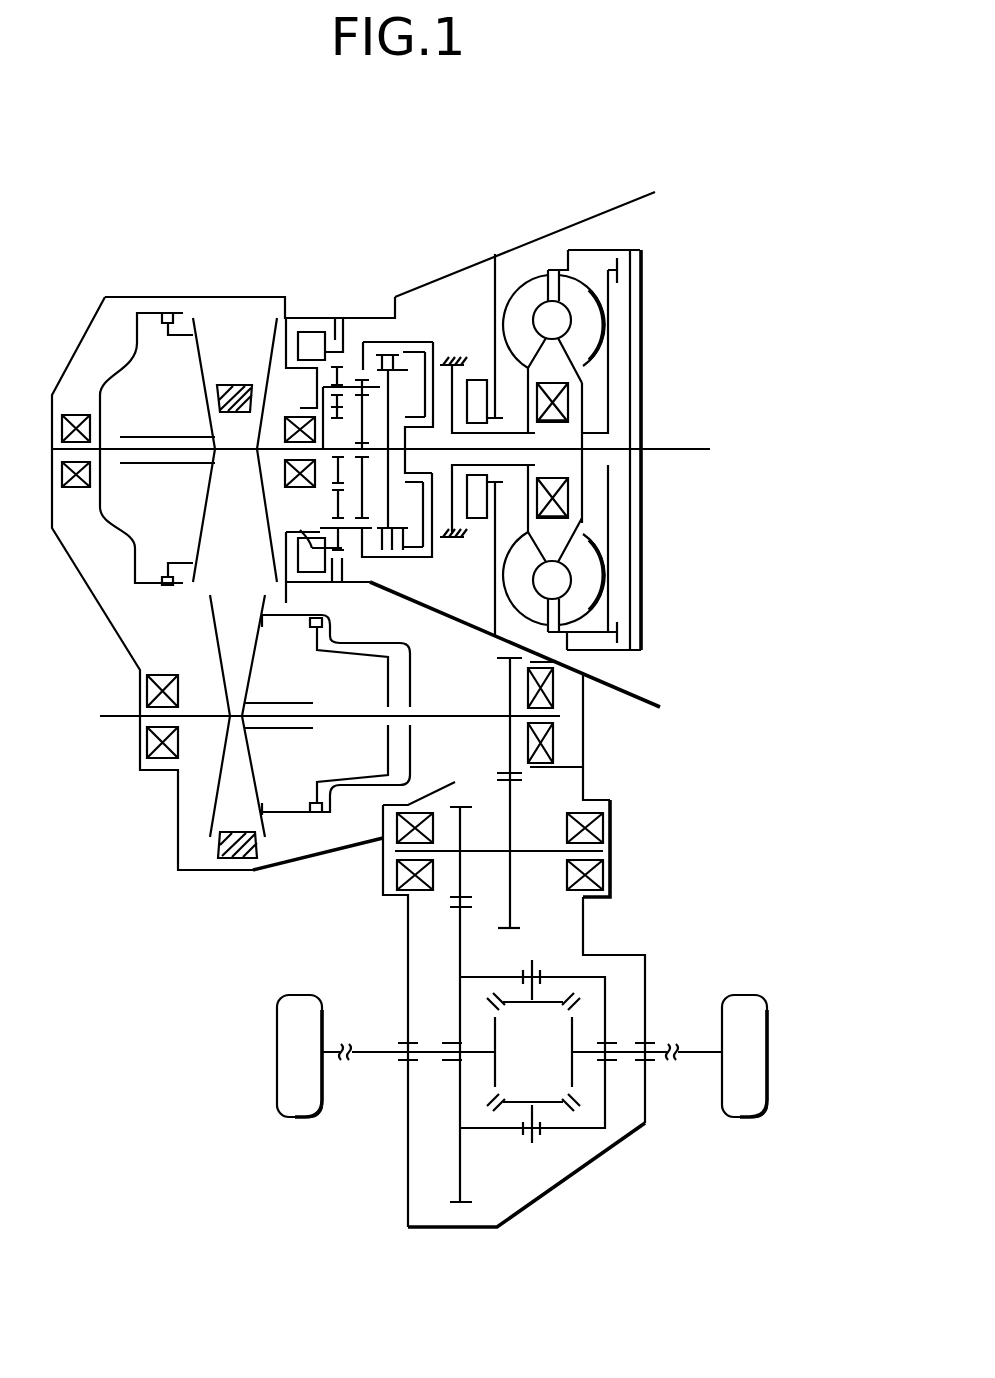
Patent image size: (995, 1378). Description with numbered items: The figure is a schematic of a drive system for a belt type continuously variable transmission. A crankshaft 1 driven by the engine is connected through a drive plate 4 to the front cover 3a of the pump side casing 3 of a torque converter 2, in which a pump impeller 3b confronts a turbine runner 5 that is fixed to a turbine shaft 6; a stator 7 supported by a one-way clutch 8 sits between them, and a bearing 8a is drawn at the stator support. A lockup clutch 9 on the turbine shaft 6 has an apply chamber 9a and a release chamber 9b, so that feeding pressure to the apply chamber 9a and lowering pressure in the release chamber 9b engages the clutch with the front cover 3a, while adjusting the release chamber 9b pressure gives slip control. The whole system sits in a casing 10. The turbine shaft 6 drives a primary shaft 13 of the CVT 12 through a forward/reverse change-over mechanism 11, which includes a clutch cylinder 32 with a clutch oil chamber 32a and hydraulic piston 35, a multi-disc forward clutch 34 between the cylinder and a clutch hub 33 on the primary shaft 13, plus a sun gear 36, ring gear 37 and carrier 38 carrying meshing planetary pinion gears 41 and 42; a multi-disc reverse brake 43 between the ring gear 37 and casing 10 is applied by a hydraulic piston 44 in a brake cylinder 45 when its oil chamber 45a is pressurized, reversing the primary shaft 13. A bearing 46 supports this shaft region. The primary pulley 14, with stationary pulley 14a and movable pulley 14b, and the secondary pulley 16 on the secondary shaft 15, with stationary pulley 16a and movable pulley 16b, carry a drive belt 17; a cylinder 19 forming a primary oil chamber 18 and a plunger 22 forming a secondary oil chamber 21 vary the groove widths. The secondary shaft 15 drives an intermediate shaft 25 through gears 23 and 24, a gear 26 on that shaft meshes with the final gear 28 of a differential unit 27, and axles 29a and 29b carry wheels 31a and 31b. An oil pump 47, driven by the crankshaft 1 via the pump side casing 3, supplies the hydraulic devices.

The crankshaft 1 is at (705, 452).
The torque converter 2 is at (523, 266).
The pump side casing 3 is at (613, 413).
The front cover 3a is at (630, 305).
The pump impeller 3b is at (540, 285).
The drive plate 4 is at (642, 352).
The turbine runner 5 is at (590, 325).
The turbine shaft 6 is at (578, 483).
The stator 7 is at (560, 394).
The one-way clutch 8 is at (575, 456).
The bearing 8a is at (565, 410).
The lockup clutch 9 is at (635, 435).
The apply chamber 9a is at (592, 257).
The release chamber 9b is at (622, 290).
The casing 10 is at (185, 297).
The forward/reverse change-over mechanism 11 is at (413, 450).
The CVT 12 is at (157, 411).
The primary shaft 13 is at (110, 447).
The primary pulley 14 is at (179, 450).
The stationary pulley 14a is at (215, 470).
The movable pulley 14b is at (205, 513).
The secondary shaft 15 is at (315, 748).
The secondary pulley 16 is at (228, 716).
The stationary pulley 16a is at (213, 620).
The movable pulley 16b is at (248, 650).
The drive belt 17 is at (228, 860).
The primary oil chamber 18 is at (150, 330).
The cylinder 19 is at (123, 532).
The secondary oil chamber 21 is at (267, 775).
The plunger 22 is at (358, 777).
The gear 23 is at (510, 742).
The gear 24 is at (513, 797).
The intermediate shaft 25 is at (542, 852).
The gear 26 is at (453, 883).
The differential unit 27 is at (563, 1136).
The final gear 28 is at (458, 943).
The axle 29a is at (377, 1058).
The axle 29b is at (697, 1058).
The wheel 31a is at (302, 1118).
The wheel 31b is at (745, 1118).
The clutch cylinder 32 is at (432, 548).
The clutch oil chamber 32a is at (427, 385).
The clutch hub 33 is at (393, 532).
The forward clutch 34 is at (386, 355).
The hydraulic piston 35 is at (425, 352).
The sun gear 36 is at (323, 500).
The ring gear 37 is at (343, 320).
The carrier 38 is at (363, 345).
The planetary pinion gear 41 is at (296, 345).
The planetary pinion gear 42 is at (298, 555).
The reverse brake 43 is at (337, 365).
The hydraulic piston 44 is at (298, 345).
The brake cylinder 45 is at (335, 365).
The oil chamber 45a is at (302, 332).
The bearing 46 is at (285, 430).
The oil pump 47 is at (477, 520).